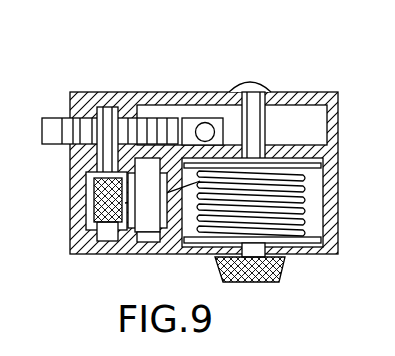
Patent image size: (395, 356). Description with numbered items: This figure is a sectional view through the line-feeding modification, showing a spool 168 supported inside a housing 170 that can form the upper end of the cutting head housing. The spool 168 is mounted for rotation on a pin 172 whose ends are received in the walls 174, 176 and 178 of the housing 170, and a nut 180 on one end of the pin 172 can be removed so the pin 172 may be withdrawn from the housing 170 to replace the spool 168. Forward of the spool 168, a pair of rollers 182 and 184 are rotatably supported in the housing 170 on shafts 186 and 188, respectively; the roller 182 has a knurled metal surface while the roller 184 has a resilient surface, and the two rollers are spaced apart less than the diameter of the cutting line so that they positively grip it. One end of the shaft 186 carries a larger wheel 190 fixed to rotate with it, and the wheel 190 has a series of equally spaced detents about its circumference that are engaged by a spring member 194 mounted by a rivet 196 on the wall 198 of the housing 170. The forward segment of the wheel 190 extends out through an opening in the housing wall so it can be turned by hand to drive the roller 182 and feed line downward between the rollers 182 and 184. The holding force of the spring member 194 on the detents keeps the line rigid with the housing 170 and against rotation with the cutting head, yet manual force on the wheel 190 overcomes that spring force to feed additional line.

The spool 168 is at (322, 176).
The housing 170 is at (211, 72).
The pin 172 is at (268, 108).
The wall 174 is at (113, 91).
The wall 176 is at (268, 143).
The wall 178 is at (173, 247).
The nut 180 is at (285, 263).
The roller 182 is at (95, 199).
The roller 184 is at (140, 215).
The shaft 186 is at (97, 157).
The shaft 188 is at (143, 235).
The wheel 190 is at (53, 128).
The spring member 194 is at (193, 114).
The rivet 196 is at (208, 124).
The wall 198 is at (262, 120).